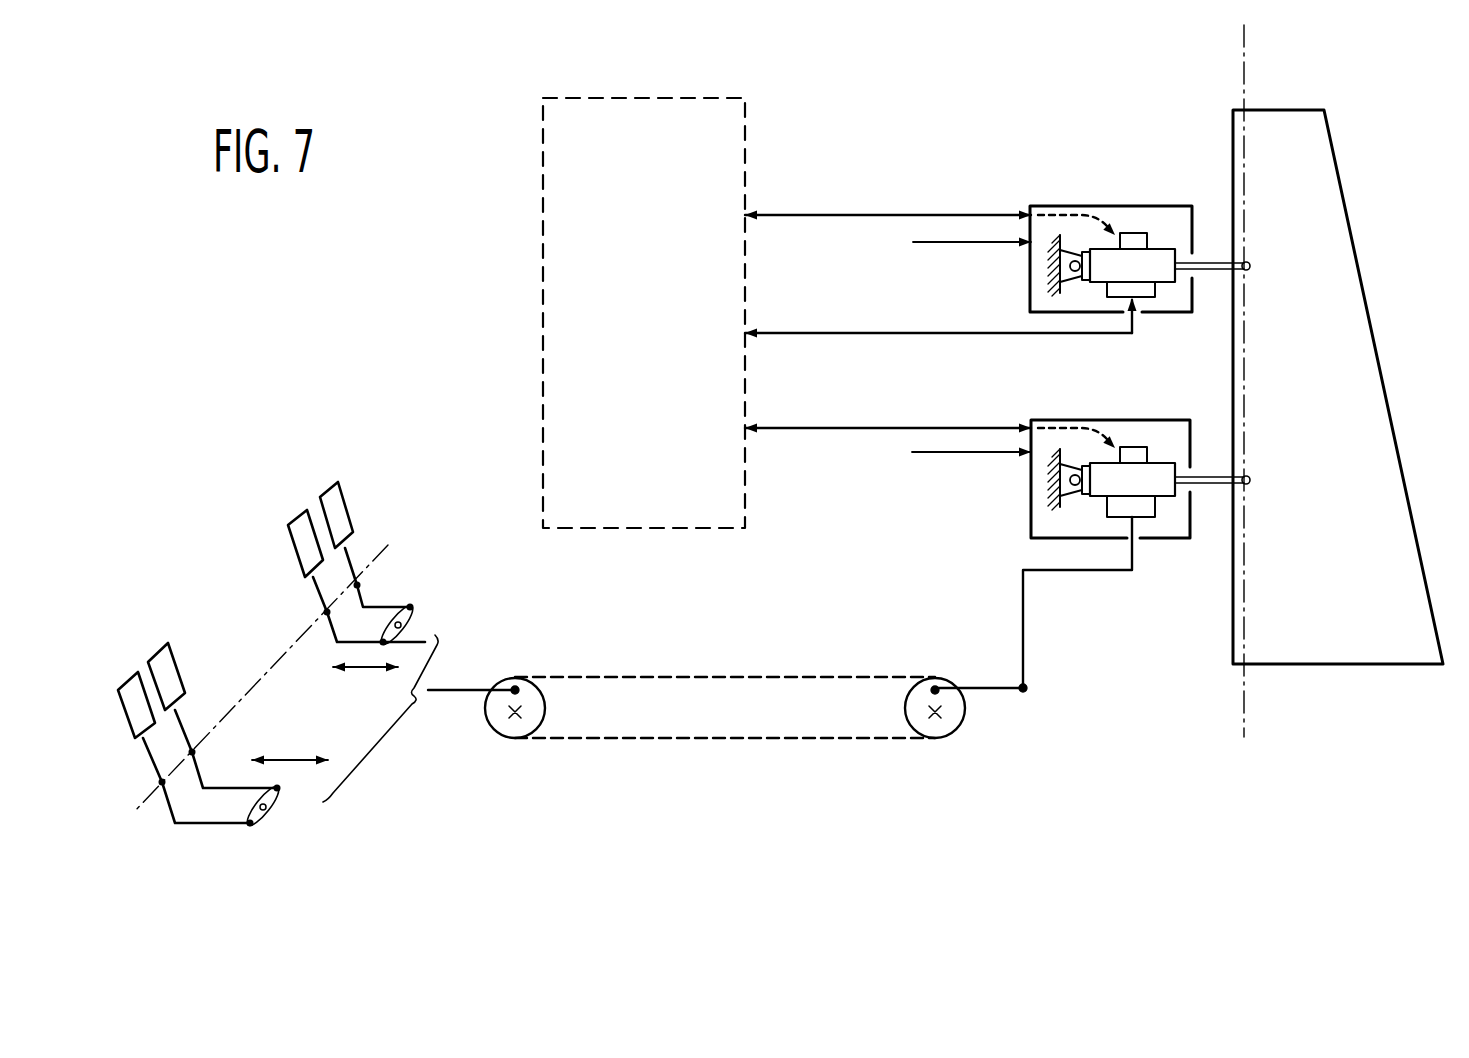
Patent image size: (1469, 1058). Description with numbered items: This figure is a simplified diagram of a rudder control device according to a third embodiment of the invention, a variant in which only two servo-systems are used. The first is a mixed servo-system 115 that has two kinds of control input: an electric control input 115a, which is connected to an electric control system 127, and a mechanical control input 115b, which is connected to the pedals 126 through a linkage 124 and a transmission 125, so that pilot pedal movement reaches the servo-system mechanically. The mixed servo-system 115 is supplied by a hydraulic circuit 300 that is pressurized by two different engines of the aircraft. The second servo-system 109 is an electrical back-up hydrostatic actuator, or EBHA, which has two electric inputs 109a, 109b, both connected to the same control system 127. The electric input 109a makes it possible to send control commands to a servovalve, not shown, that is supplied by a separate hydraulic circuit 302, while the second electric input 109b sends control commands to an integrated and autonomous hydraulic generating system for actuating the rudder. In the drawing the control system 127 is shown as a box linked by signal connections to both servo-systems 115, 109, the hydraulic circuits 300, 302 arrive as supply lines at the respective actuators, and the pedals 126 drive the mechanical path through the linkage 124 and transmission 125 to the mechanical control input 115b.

The electric control system 127 is at (745, 120).
The second servo-system 109 is at (1097, 206).
The electric input 109a is at (1133, 233).
The second electric input 109b is at (1143, 292).
The mixed servo-system 115 is at (1100, 420).
The electric control input 115a is at (1133, 447).
The mechanical control input 115b is at (1147, 507).
The hydraulic circuit 302 is at (973, 242).
The hydraulic circuit 300 is at (970, 452).
The transmission 125 is at (1030, 647).
The linkage 124 is at (837, 738).
The pedals 126 is at (182, 628).